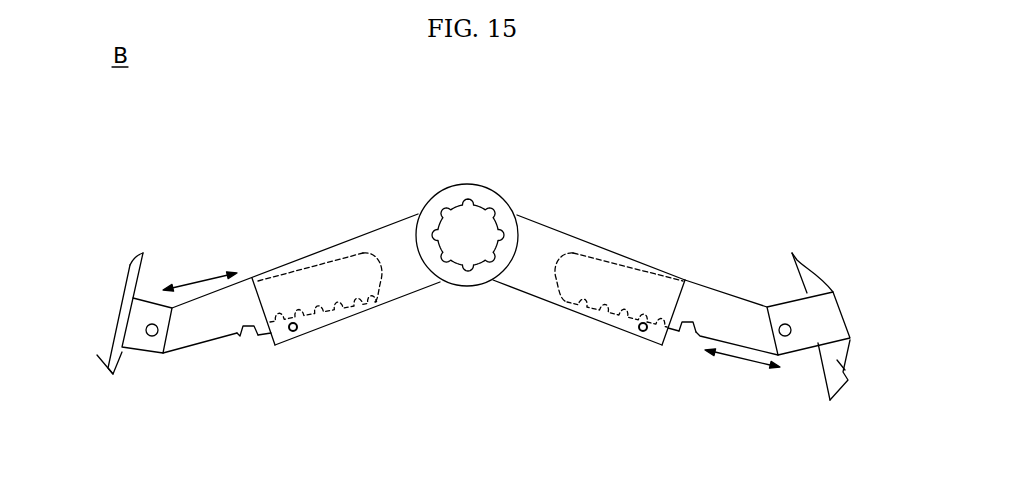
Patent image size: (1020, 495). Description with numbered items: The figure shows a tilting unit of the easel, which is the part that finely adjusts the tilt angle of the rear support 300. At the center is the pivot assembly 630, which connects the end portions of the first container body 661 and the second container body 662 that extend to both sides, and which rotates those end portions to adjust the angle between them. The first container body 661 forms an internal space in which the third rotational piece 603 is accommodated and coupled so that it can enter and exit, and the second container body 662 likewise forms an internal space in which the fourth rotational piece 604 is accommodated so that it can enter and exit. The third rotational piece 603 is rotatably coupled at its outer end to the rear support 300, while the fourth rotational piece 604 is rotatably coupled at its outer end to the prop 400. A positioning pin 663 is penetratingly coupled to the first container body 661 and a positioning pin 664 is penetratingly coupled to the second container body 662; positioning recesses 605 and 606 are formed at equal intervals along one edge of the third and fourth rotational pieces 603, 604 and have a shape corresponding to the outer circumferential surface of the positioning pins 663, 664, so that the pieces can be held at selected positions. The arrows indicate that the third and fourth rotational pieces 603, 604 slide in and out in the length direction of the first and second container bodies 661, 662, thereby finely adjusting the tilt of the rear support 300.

The pivot assembly 630 is at (467, 166).
The second container body 662 is at (372, 233).
The first container body 661 is at (563, 232).
The fourth rotational piece 604 is at (337, 259).
The third rotational piece 603 is at (727, 297).
The positioning recess 606 is at (248, 338).
The positioning recess 605 is at (688, 340).
The positioning pin 664 is at (293, 331).
The positioning pin 663 is at (641, 331).
The prop 400 is at (97, 355).
The rear support 300 is at (846, 378).